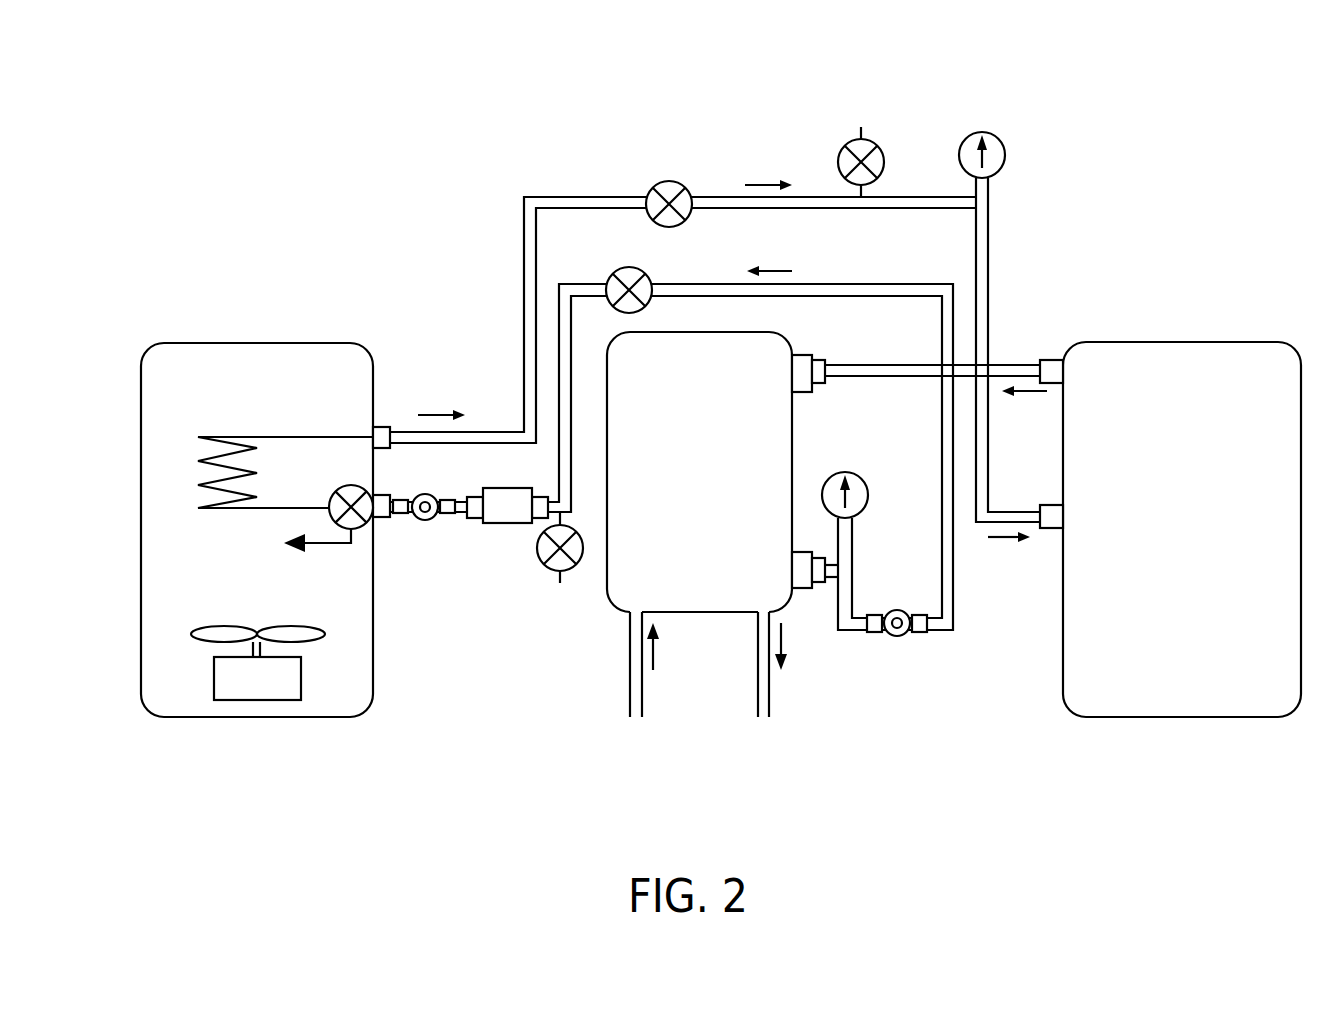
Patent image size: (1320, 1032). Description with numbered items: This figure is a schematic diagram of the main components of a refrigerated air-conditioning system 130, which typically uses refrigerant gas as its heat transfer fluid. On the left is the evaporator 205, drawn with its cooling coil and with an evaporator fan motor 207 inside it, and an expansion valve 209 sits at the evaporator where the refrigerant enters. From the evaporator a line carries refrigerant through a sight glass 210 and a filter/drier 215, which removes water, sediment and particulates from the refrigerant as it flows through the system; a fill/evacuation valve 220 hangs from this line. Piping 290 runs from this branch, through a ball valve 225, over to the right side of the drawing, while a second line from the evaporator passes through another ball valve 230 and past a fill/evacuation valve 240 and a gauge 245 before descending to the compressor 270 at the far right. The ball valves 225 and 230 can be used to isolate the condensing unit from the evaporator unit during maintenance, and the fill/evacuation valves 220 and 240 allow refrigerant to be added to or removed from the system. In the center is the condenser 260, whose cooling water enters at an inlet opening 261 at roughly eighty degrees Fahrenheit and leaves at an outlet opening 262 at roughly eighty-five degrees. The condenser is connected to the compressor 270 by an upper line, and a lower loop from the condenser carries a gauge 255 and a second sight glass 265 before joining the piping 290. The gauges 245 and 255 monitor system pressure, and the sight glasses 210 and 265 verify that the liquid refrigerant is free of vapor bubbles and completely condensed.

The refrigerated air-conditioning system 130 is at (1088, 103).
The evaporator 205 is at (275, 341).
The evaporator fan motor 207 is at (283, 693).
The expansion valve 209 is at (349, 483).
The sight glass 210 is at (423, 494).
The filter/drier 215 is at (517, 524).
The fill/evacuation valve 220 is at (546, 568).
The ball valve 225 is at (628, 267).
The ball valve 230 is at (663, 181).
The fill/evacuation valve 240 is at (848, 141).
The gauge 245 is at (978, 134).
The gauge 255 is at (847, 472).
The condenser 260 is at (725, 492).
The inlet opening 261 is at (630, 620).
The outlet opening 262 is at (758, 620).
The sight glass 265 is at (897, 637).
The compressor 270 is at (1187, 341).
The piping 290 is at (820, 284).